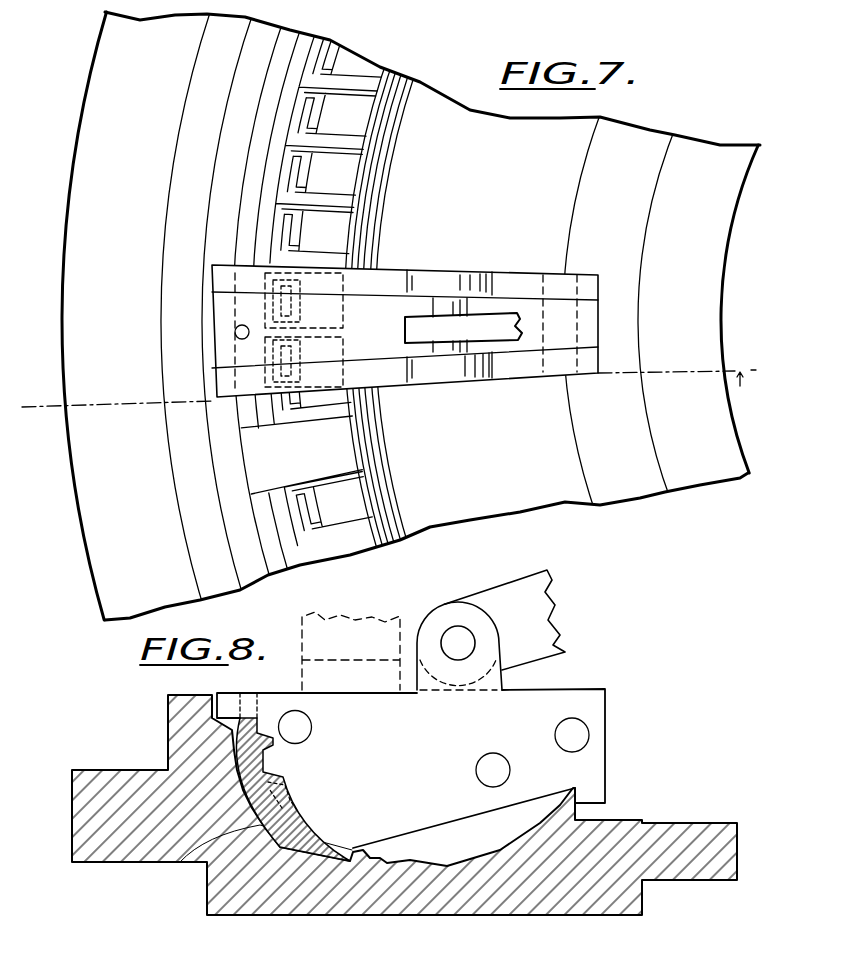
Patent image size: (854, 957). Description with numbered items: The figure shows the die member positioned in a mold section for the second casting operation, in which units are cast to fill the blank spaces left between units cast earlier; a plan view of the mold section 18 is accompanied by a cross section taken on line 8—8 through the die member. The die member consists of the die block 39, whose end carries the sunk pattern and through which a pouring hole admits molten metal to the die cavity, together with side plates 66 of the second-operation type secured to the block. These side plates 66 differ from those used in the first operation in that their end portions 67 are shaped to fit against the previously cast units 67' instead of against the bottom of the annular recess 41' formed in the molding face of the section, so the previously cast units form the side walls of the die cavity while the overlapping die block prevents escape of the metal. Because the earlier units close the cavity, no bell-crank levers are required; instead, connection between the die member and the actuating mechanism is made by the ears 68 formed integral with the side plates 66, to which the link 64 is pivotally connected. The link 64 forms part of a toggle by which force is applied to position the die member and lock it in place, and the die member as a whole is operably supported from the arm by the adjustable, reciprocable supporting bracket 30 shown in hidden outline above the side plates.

In FIG. 7, the rotor body / supporting ring 18 is at (411, 322).
In FIG. 8, the rotor body / supporting ring 18 is at (157, 778).
In FIG. 7, the die block 39 is at (353, 303).
In FIG. 7, the side plates 66 is at (512, 283).
In FIG. 8, the side plates 66 is at (597, 770).
In FIG. 7, the ears 68 is at (450, 377).
In FIG. 8, the ears 68 is at (488, 631).
In FIG. 7, the link 64 is at (512, 328).
In FIG. 8, the link 64 is at (513, 572).
In FIG. 8, the end portions 67 is at (293, 789).
In FIG. 7, the previously cast units 67' is at (304, 287).
In FIG. 8, the previously cast units 67' is at (185, 717).
In FIG. 8, the die member supporting bracket 30 is at (351, 638).
In FIG. 8, the annular recess 41' is at (250, 869).
In FIG. 7, the section line 8— 8 is at (396, 403).